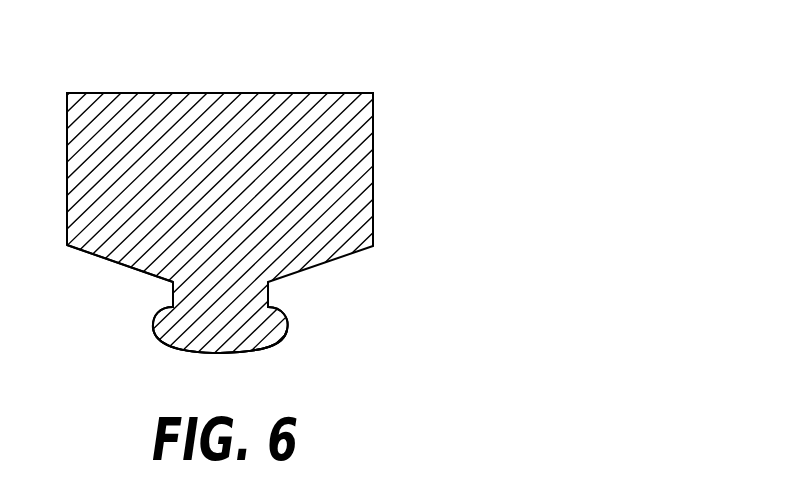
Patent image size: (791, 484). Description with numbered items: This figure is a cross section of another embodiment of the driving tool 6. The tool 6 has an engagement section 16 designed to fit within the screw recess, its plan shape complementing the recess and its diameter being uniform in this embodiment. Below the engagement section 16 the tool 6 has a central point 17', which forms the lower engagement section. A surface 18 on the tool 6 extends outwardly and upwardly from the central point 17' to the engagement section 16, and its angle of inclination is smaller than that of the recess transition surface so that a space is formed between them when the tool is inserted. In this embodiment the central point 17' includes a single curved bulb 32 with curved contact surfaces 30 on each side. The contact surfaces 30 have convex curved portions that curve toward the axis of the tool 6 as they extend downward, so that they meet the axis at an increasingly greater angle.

The tool 6 is at (308, 107).
The engagement section 16 is at (381, 152).
The central point 17' is at (355, 273).
The surface 18 is at (128, 275).
The contact surfaces 30 is at (288, 325).
The curved bulb 32 is at (203, 333).